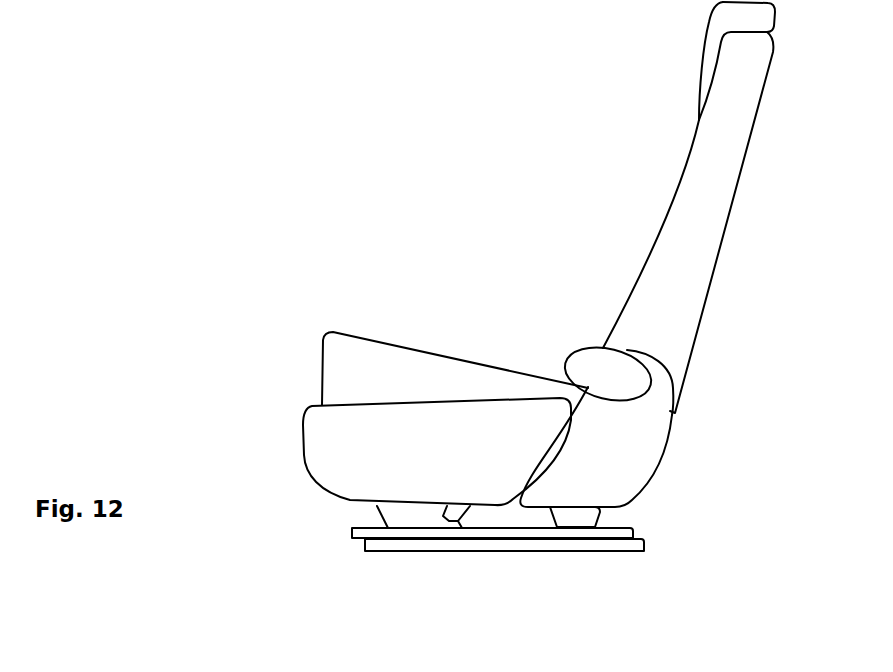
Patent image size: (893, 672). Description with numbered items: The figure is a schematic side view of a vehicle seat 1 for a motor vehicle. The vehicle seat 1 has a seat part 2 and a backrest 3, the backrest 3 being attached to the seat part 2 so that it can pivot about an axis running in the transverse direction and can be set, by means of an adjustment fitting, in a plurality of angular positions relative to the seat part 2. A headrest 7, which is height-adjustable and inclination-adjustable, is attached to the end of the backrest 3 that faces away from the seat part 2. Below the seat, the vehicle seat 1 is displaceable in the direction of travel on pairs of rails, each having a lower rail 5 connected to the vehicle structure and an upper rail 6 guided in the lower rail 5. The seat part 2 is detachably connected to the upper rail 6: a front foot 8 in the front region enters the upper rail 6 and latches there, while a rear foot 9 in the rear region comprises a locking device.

The vehicle seat 1 is at (335, 260).
The seat part 2 is at (377, 377).
The backrest 3 is at (693, 290).
The lower rail 5 is at (633, 553).
The upper rail 6 is at (610, 527).
The headrest 7 is at (727, 17).
The front foot 8 is at (418, 517).
The rear foot 9 is at (572, 517).